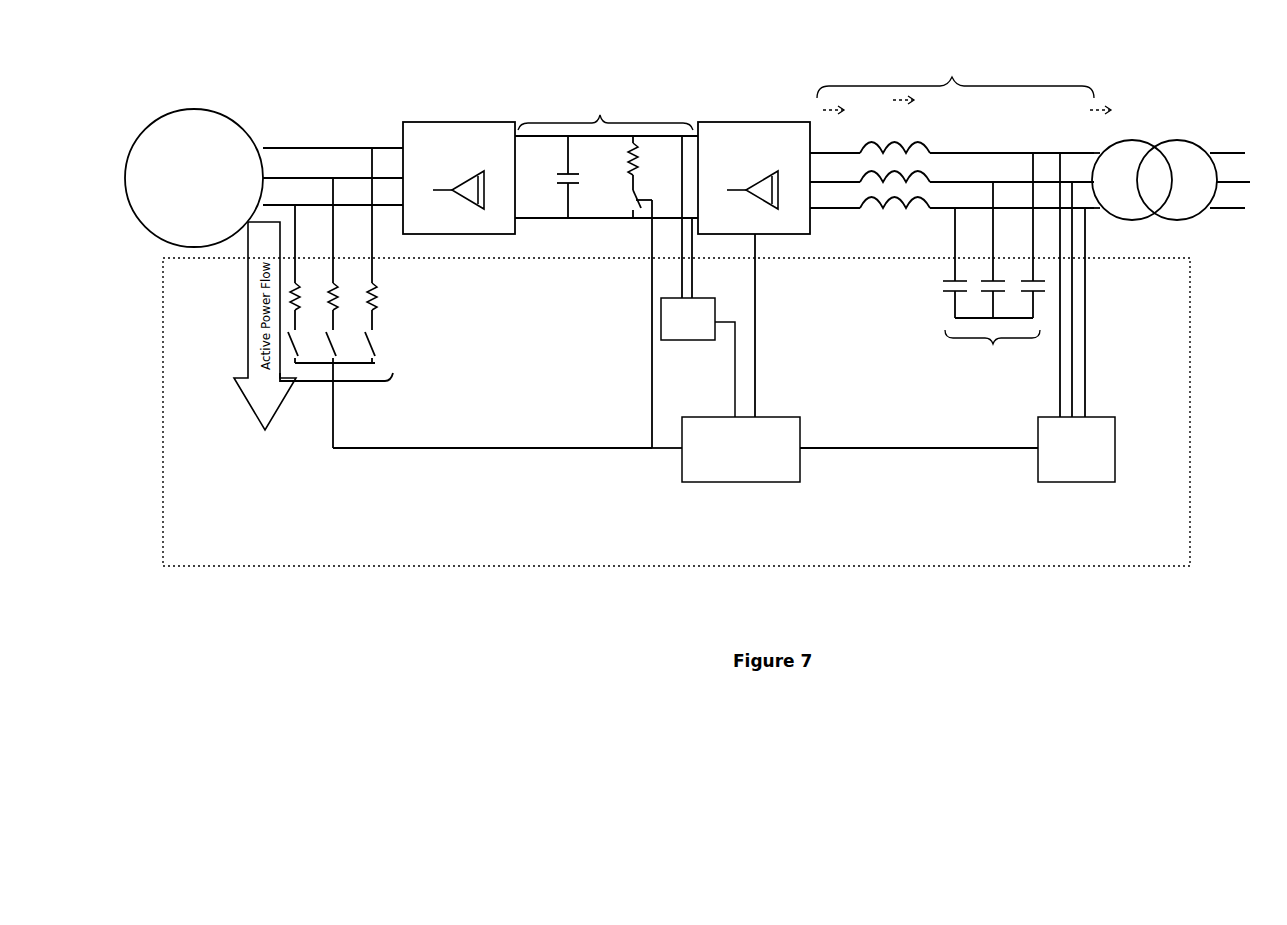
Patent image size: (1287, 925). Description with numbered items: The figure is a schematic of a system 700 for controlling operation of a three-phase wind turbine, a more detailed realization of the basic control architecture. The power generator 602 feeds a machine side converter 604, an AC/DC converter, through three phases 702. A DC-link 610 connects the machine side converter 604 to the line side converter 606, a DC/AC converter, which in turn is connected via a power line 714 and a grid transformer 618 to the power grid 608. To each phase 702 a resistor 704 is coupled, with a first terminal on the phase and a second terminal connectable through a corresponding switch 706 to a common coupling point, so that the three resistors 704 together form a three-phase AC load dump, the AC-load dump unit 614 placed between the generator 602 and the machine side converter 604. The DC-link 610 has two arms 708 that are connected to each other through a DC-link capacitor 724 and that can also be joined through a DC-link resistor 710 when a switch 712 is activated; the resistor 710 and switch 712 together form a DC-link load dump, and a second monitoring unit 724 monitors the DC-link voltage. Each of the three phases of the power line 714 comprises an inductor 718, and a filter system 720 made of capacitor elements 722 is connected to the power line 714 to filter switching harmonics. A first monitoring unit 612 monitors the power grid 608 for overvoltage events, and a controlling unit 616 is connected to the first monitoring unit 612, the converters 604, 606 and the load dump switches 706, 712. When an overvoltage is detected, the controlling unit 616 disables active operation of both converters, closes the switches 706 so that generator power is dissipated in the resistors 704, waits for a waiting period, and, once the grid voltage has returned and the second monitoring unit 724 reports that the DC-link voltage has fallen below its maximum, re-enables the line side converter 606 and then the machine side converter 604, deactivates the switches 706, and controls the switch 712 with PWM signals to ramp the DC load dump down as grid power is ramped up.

The power generator 602 is at (196, 108).
The machine side converter 604 is at (425, 122).
The line side converter 606 is at (787, 122).
The power grid 608 is at (1219, 150).
The DC-link 610 is at (606, 152).
The first monitoring unit 612 is at (1073, 484).
The AC-load dump unit 614 is at (340, 385).
The controlling unit 616 is at (745, 484).
The grid transformer 618 is at (1134, 141).
The system for controlling operation of a wind turbine 700 is at (983, 567).
The phase 702 is at (320, 176).
The resistor 704 is at (338, 292).
The switch 706 is at (332, 334).
The DC-link arm 708 is at (536, 136).
The DC-link resistor 710 is at (639, 144).
The switch 712 is at (627, 205).
The power line 714 is at (960, 127).
The inductor 718 is at (892, 212).
The filter system 720 is at (992, 264).
The capacitor element 722 is at (978, 296).
The DC-link capacitor 724 is at (563, 192).